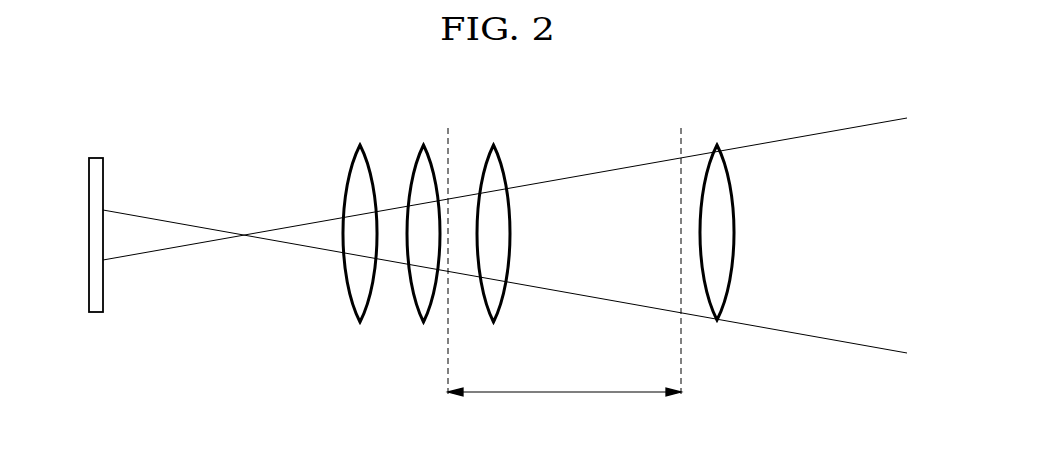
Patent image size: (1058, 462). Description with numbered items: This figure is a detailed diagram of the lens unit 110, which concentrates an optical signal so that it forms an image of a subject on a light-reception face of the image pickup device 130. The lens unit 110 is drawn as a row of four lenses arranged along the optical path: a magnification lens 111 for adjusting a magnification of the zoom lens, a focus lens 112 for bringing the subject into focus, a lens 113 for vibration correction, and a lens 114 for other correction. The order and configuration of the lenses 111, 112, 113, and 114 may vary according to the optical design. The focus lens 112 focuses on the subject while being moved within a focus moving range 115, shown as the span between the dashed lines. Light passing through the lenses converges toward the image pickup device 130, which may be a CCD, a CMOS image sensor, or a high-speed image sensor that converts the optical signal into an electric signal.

The lens unit 110 is at (607, 97).
The magnification lens 111 is at (725, 318).
The focus lens 112 is at (503, 314).
The lens for vibration correction 113 is at (424, 322).
The lens for other correction 114 is at (371, 314).
The focus moving range 115 is at (564, 262).
The image pickup device 130 is at (96, 312).